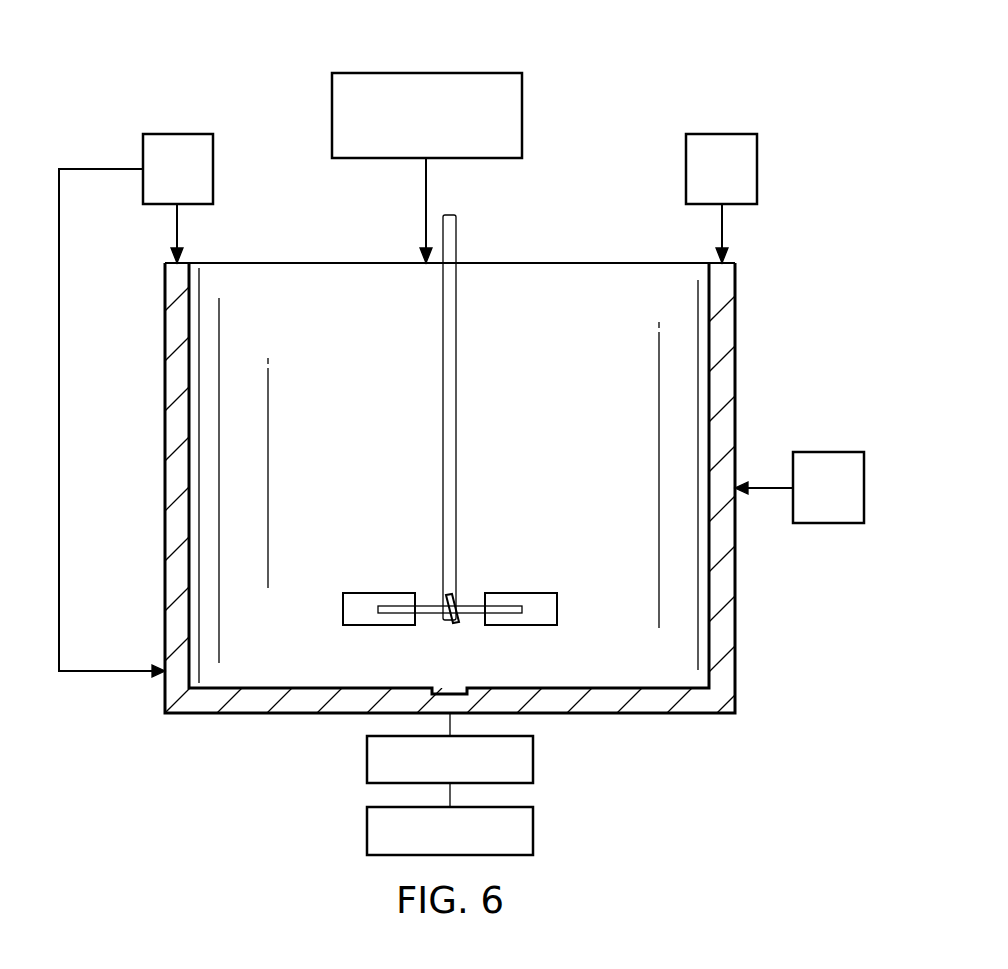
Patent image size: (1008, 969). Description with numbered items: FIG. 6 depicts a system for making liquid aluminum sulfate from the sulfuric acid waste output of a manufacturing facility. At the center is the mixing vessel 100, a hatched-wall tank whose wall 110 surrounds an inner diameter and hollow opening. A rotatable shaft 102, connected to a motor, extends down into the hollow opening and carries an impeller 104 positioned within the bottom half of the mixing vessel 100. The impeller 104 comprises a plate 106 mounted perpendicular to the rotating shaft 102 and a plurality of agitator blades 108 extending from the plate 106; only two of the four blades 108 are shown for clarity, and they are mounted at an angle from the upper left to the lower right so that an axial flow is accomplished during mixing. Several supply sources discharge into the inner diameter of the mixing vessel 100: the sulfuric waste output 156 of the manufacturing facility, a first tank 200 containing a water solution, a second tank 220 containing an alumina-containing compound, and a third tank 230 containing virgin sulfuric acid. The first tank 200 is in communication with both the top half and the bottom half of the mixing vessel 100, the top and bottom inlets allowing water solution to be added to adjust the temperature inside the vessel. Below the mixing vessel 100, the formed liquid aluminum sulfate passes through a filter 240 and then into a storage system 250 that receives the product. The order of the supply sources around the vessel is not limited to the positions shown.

The mixing vessel 100 is at (304, 248).
The rotatable shaft 102 is at (443, 345).
The impeller 104 is at (470, 600).
The plate 106 is at (466, 614).
The agitator blades 108 is at (348, 612).
The tank wall 110 is at (165, 432).
The sulfuric waste output 156 is at (413, 73).
The first tank 200 is at (165, 134).
The second tank 220 is at (733, 134).
The third tank 230 is at (828, 452).
The filter 240 is at (367, 760).
The storage system 250 is at (367, 830).